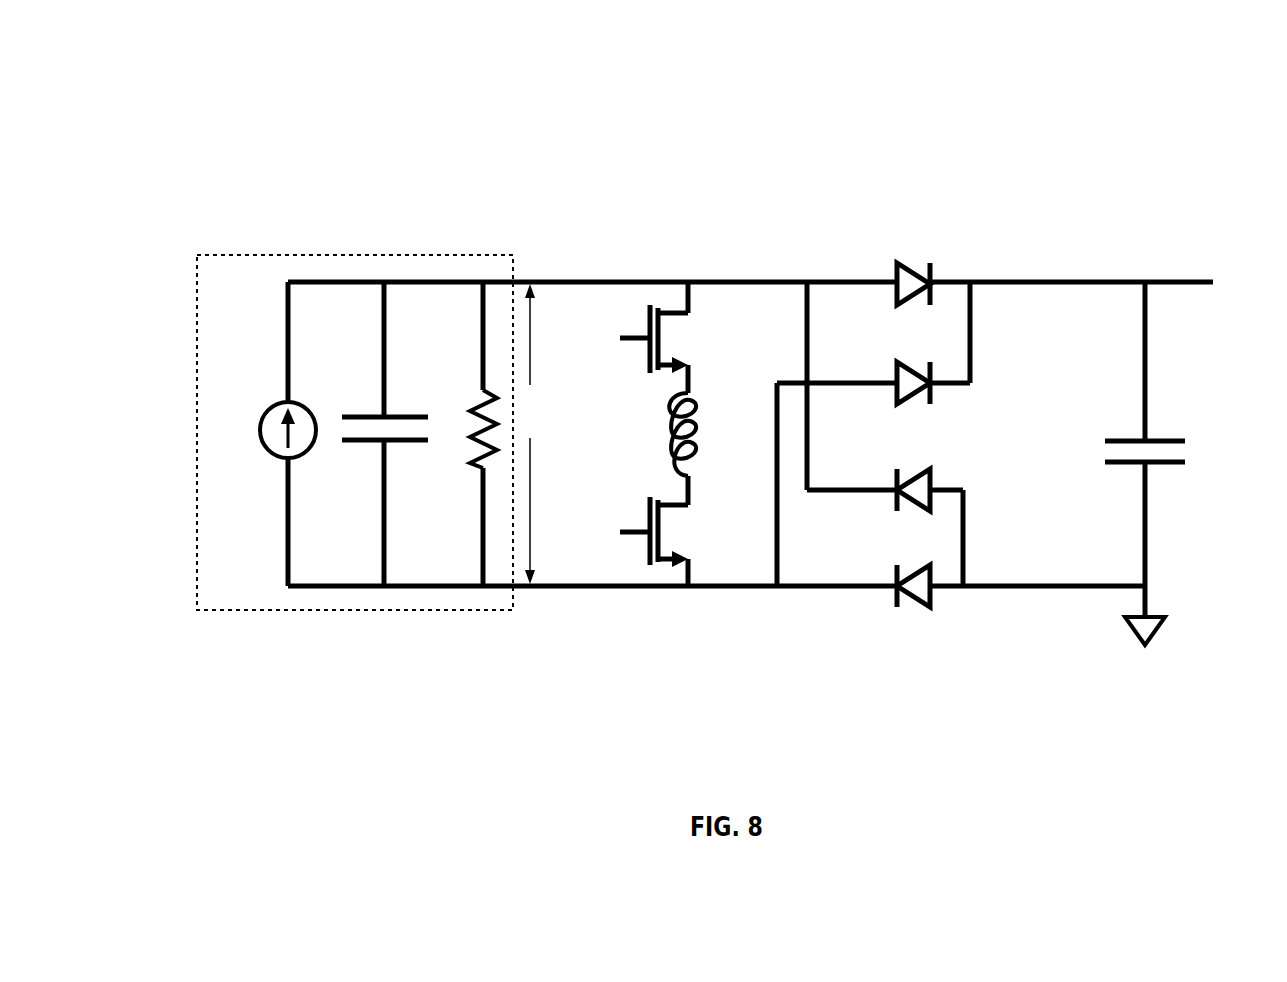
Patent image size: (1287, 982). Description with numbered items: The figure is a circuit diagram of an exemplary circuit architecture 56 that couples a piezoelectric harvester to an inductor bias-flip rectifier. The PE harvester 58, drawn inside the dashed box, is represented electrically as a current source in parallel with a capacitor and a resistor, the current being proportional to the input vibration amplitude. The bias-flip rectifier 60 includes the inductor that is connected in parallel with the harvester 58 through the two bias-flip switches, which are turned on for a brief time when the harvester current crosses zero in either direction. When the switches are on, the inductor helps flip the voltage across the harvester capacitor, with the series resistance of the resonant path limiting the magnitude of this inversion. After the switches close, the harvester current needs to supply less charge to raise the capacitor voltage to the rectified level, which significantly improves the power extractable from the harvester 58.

The circuit architecture 56 is at (214, 68).
The PE harvester 58 is at (357, 414).
The bias-flip rectifier 60 is at (781, 259).